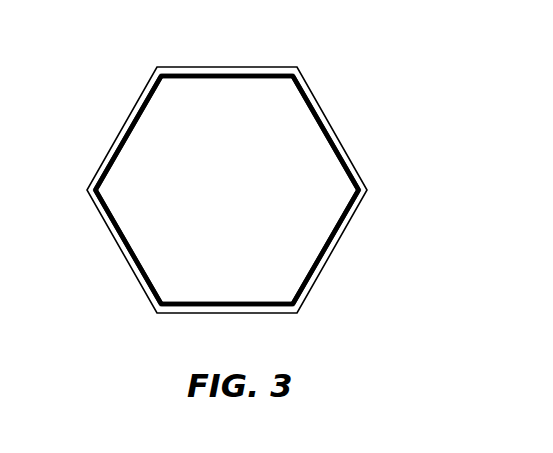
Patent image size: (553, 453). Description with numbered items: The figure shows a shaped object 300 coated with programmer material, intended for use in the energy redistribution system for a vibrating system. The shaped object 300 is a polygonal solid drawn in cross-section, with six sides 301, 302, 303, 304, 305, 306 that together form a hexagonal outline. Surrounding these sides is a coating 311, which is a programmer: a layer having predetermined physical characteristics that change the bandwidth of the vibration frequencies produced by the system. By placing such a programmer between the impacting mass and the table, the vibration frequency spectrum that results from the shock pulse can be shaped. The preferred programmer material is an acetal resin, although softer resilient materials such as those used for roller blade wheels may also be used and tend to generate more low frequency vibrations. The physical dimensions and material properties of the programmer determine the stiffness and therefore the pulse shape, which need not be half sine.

The shaped object 300 is at (286, 186).
The side 301 is at (227, 79).
The side 302 is at (322, 127).
The side 303 is at (325, 252).
The side 304 is at (234, 304).
The side 305 is at (123, 244).
The side 306 is at (123, 144).
The coating 311 is at (128, 117).